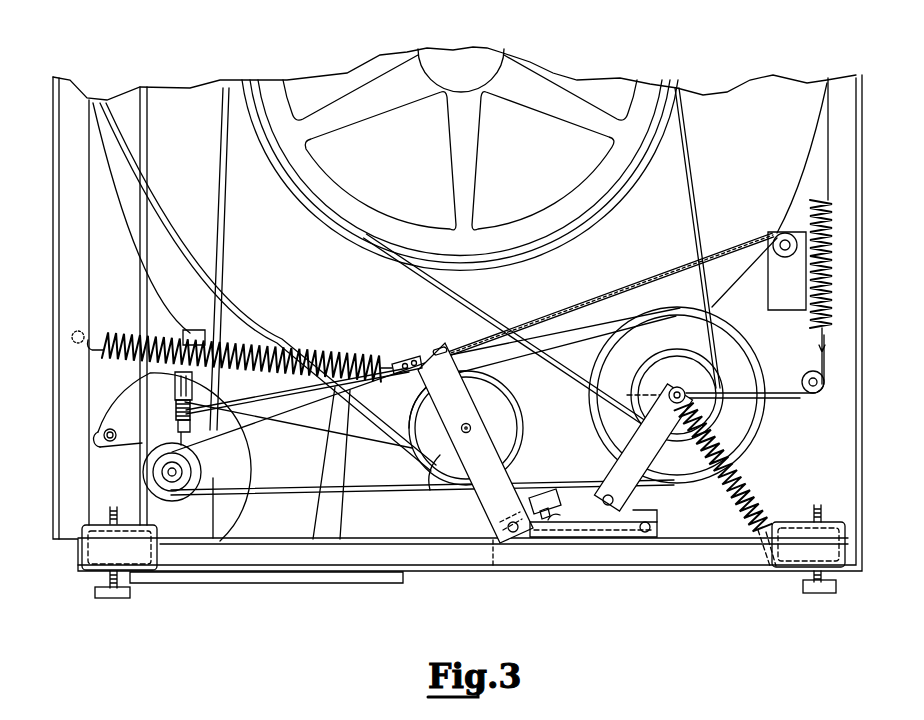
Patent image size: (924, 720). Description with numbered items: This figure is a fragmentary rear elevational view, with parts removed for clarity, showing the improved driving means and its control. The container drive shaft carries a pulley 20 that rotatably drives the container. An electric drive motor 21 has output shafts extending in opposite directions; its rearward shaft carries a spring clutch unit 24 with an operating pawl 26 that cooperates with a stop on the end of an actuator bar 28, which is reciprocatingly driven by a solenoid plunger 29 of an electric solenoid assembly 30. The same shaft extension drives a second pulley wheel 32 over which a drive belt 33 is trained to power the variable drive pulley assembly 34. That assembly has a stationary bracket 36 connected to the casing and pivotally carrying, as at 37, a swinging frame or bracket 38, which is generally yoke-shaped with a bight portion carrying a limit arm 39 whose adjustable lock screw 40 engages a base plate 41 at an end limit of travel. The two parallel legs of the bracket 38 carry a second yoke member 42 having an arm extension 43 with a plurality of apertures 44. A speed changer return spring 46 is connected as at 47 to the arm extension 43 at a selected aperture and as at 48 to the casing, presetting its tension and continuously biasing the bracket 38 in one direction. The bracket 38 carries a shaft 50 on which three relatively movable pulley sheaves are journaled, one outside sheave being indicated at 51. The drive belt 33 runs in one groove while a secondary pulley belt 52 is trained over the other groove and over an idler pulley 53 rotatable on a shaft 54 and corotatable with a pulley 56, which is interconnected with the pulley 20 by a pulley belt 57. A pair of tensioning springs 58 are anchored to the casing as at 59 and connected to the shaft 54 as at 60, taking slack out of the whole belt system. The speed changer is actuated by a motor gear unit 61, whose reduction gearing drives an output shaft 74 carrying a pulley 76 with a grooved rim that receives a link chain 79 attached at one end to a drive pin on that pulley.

The pulley 20 is at (366, 238).
The electric drive motor 21 is at (220, 470).
The spring clutch unit 24 is at (142, 462).
The operating pawl 26 is at (180, 492).
The actuator bar 28 is at (195, 393).
The solenoid plunger 29 is at (172, 374).
The electric solenoid assembly 30 is at (205, 333).
The second pulley wheel 32 is at (85, 528).
The drive belt 33 is at (288, 497).
The variable drive pulley assembly 34 is at (524, 436).
The stationary bracket 36 is at (493, 560).
The pivot 37 is at (528, 508).
The swinging frame or bracket 38 is at (416, 412).
The limit arm 39 is at (556, 500).
The adjustable lock screw 40 is at (570, 536).
The base plate 41 is at (552, 538).
The second yoke member 42 is at (432, 350).
The arm extension 43 is at (410, 358).
The apertures 44 is at (400, 362).
The speed changer return spring 46 is at (345, 360).
The spring connection 47 is at (392, 368).
The spring connection 48 is at (100, 340).
The shaft 50 is at (460, 430).
The outside sheave member 51 is at (440, 465).
The secondary pulley belt 52 is at (510, 377).
The idler pulley 53 is at (758, 446).
The shaft 54 is at (668, 385).
The pulley 56 is at (760, 400).
The pulley belt 57 is at (556, 388).
The tensioning springs 58 is at (742, 482).
The spring connection 59 is at (830, 178).
The spring connection 60 is at (648, 392).
The motor gear unit 61 is at (810, 300).
The output shaft 74 is at (835, 215).
The pulley 76 is at (776, 236).
The link chain 79 is at (582, 300).